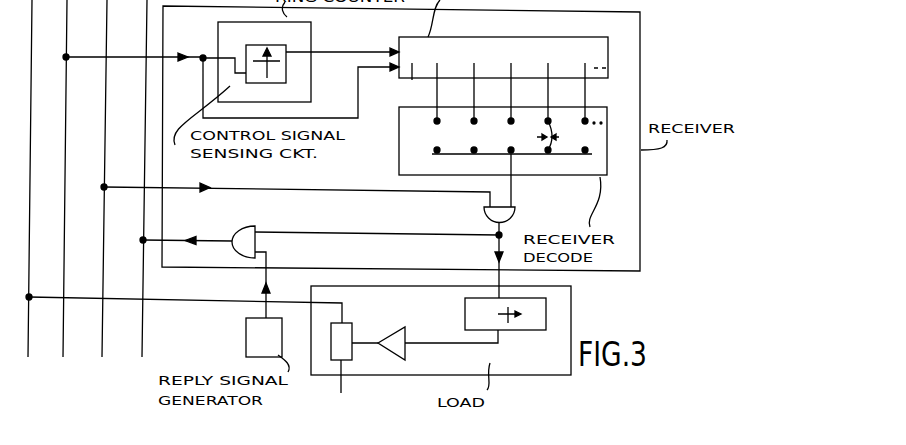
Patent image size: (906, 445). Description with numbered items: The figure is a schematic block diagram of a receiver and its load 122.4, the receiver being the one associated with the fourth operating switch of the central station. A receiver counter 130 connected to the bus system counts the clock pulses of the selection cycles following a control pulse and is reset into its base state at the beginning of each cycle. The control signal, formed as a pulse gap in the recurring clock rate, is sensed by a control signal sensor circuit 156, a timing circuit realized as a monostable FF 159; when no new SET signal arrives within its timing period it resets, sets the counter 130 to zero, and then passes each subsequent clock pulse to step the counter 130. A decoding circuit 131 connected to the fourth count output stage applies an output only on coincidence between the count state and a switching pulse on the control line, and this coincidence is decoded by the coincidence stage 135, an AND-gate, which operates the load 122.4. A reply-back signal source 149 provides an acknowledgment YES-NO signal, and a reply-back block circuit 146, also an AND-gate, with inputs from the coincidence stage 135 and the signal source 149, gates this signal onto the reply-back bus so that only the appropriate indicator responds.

The receiver counter 130 is at (563, 57).
The decoding circuit 131 is at (603, 126).
The coincidence stage 135 is at (508, 213).
The reply-back block circuit 146 is at (240, 237).
The reply-back signal source 149 is at (263, 338).
The control signal sensor circuit 156 is at (299, 38).
The monostable FF 159 is at (253, 53).
The load 122.4 is at (557, 315).